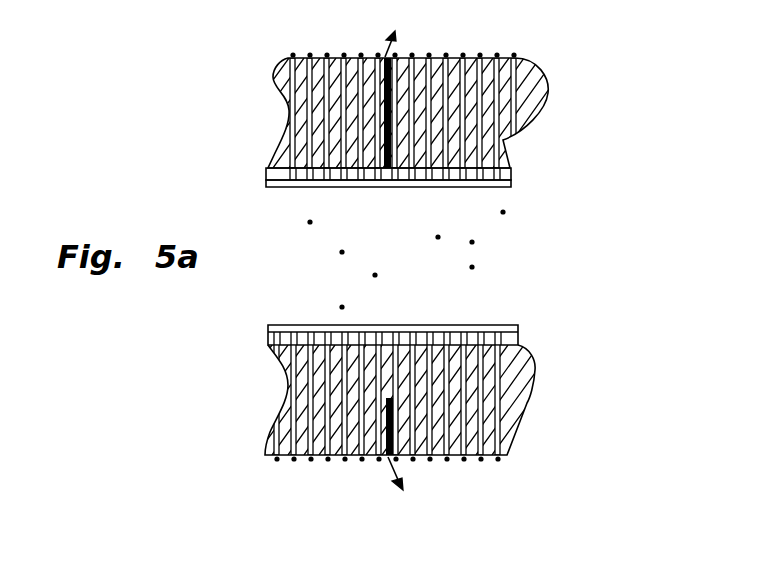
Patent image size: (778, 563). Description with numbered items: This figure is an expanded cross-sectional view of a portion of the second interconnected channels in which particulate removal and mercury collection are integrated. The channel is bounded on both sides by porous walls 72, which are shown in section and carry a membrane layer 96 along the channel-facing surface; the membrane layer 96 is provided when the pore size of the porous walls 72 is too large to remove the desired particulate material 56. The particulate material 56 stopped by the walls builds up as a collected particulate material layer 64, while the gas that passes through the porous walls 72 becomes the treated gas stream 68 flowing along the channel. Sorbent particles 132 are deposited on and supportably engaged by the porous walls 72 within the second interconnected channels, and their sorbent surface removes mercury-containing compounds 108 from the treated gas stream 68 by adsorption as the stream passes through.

The particulate material 56 is at (310, 222).
The collected particulate material layer 64 is at (512, 187).
The treated gas stream 68 is at (372, 432).
The porous walls 72 is at (543, 103).
The membrane layer 96 is at (512, 175).
The mercury-containing compounds 108 is at (472, 267).
The sorbent particles 132 is at (514, 53).